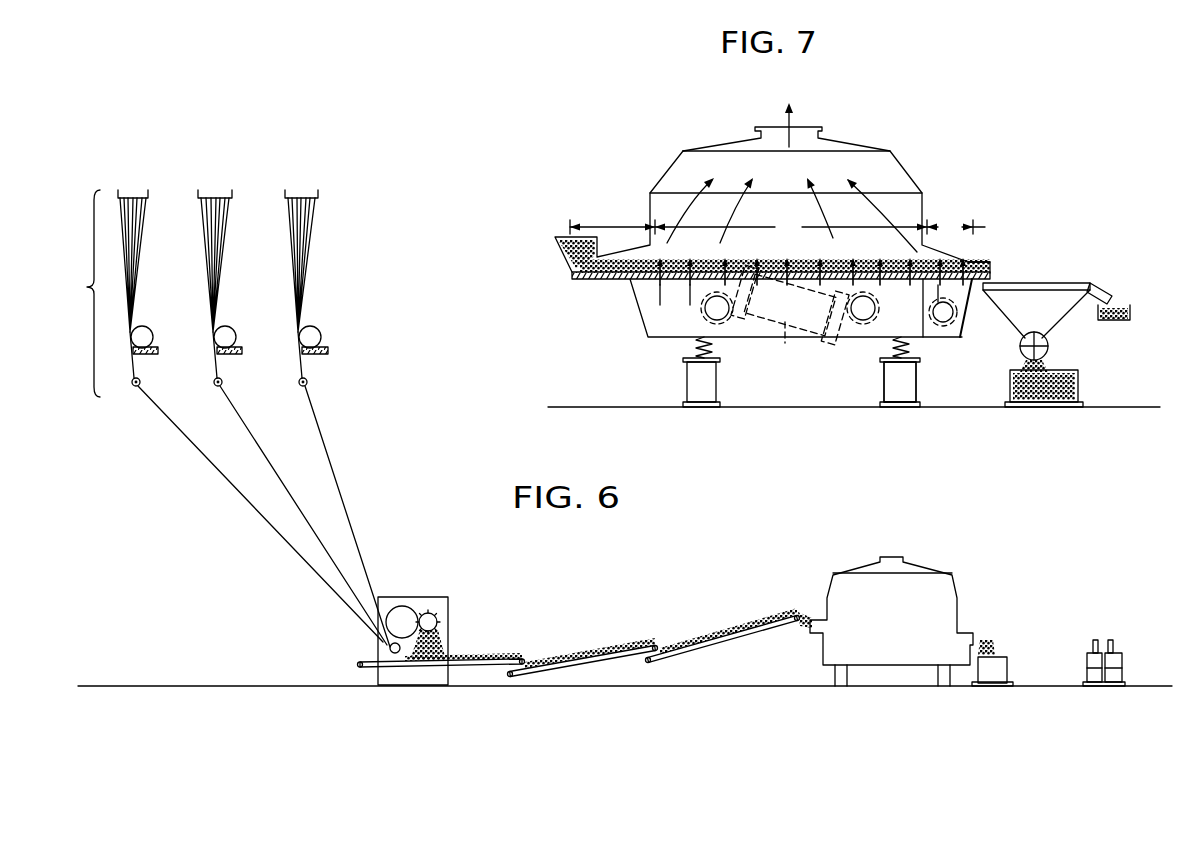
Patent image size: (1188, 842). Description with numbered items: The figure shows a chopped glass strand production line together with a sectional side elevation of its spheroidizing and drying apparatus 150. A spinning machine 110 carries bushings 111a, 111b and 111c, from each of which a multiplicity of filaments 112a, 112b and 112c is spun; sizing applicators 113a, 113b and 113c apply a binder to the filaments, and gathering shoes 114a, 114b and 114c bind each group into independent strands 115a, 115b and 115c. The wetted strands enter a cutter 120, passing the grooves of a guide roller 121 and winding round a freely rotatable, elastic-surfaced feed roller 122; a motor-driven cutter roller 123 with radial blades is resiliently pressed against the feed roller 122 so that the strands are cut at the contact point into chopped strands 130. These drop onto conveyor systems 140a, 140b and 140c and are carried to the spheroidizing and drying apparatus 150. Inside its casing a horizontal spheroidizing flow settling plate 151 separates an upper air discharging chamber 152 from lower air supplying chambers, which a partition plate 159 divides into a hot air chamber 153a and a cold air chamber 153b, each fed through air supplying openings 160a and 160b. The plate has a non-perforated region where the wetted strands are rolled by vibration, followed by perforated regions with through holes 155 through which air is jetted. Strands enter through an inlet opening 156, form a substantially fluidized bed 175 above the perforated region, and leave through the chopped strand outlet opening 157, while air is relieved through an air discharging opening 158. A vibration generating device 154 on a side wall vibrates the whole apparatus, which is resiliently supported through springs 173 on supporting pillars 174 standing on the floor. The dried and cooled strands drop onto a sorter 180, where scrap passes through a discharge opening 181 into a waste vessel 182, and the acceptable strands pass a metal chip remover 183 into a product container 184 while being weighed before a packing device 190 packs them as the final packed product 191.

In FIG. 6, the spinning machine 110 is at (206, 278).
In FIG. 6, the bushing 111a is at (130, 176).
In FIG. 6, the bushing 111b is at (219, 176).
In FIG. 6, the bushing 111c is at (303, 176).
In FIG. 6, the filaments 112a is at (140, 248).
In FIG. 6, the filaments 112b is at (220, 248).
In FIG. 6, the filaments 112c is at (306, 248).
In FIG. 6, the sizing applicator 113a is at (137, 329).
In FIG. 6, the sizing applicator 113b is at (221, 329).
In FIG. 6, the sizing applicator 113c is at (307, 329).
In FIG. 6, the gathering shoe 114a is at (140, 382).
In FIG. 6, the gathering shoe 114b is at (222, 382).
In FIG. 6, the gathering shoe 114c is at (308, 383).
In FIG. 6, the strand 115a is at (192, 453).
In FIG. 6, the strand 115b is at (258, 449).
In FIG. 6, the strand 115c is at (330, 460).
In FIG. 6, the cutter 120 is at (422, 618).
In FIG. 6, the guide roller 121 is at (380, 650).
In FIG. 6, the feed roller 122 is at (402, 605).
In FIG. 6, the cutter roller 123 is at (440, 620).
In FIG. 7, the chopped strands 130 is at (562, 263).
In FIG. 6, the chopped strands 130 is at (432, 657).
In FIG. 6, the conveyor system 140a is at (487, 667).
In FIG. 6, the conveyor system 140b is at (610, 662).
In FIG. 6, the conveyor system 140c is at (755, 637).
In FIG. 7, the spheroidizing and drying apparatus 150 is at (821, 267).
In FIG. 6, the spheroidizing and drying apparatus 150 is at (927, 562).
In FIG. 7, the spheroidizing flow settling plate 151 is at (970, 298).
In FIG. 7, the air discharging chamber 152 is at (905, 172).
In FIG. 7, the hot air chamber 153a is at (738, 340).
In FIG. 7, the cold air chamber 153b is at (937, 333).
In FIG. 7, the vibration generating device 154 is at (790, 319).
In FIG. 7, the through holes 155 is at (755, 272).
In FIG. 7, the inlet opening 156 is at (566, 238).
In FIG. 7, the chopped strand outlet opening 157 is at (992, 264).
In FIG. 7, the air discharging opening 158 is at (805, 133).
In FIG. 7, the partition plate 159 is at (920, 318).
In FIG. 7, the air supplying opening 160a is at (702, 304).
In FIG. 7, the air supplying opening 160b is at (942, 324).
In FIG. 7, the spring 173 is at (893, 353).
In FIG. 7, the supporting pillar 174 is at (920, 387).
In FIG. 7, the fluidized bed 175 is at (797, 270).
In FIG. 7, the sorter 180 is at (1066, 262).
In FIG. 7, the discharge opening 181 is at (1113, 286).
In FIG. 7, the waste vessel 182 is at (1112, 322).
In FIG. 7, the metal chip remover 183 is at (1050, 350).
In FIG. 7, the product container 184 is at (1080, 388).
In FIG. 6, the product container 184 is at (1010, 667).
In FIG. 6, the packing device 190 is at (1125, 618).
In FIG. 6, the final packed product 191 is at (1123, 676).